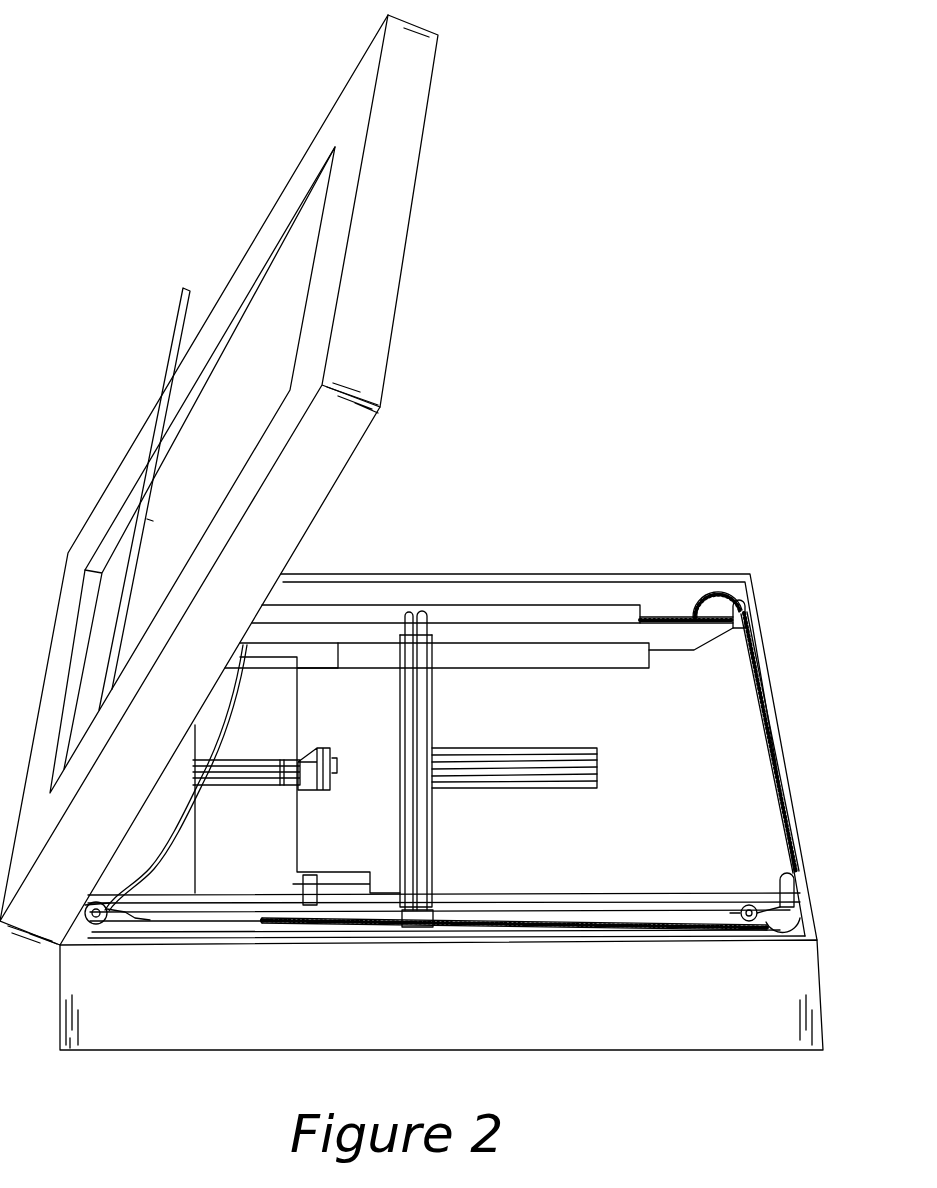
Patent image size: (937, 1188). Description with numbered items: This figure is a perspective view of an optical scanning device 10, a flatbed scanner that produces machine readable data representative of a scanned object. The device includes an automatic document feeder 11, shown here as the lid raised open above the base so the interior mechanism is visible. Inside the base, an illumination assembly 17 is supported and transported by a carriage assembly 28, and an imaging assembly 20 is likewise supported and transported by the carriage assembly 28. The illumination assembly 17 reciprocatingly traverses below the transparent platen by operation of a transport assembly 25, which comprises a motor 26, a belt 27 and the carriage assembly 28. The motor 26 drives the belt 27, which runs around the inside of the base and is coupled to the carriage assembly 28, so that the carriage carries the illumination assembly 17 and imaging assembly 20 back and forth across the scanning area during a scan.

The optical scanning device 10 is at (613, 258).
The automatic document feeder 11 is at (97, 423).
The illumination assembly 17 is at (428, 702).
The imaging assembly 20 is at (332, 779).
The transport assembly 25 is at (265, 957).
The motor 26 is at (92, 922).
The belt 27 is at (569, 908).
The carriage assembly 28 is at (443, 808).